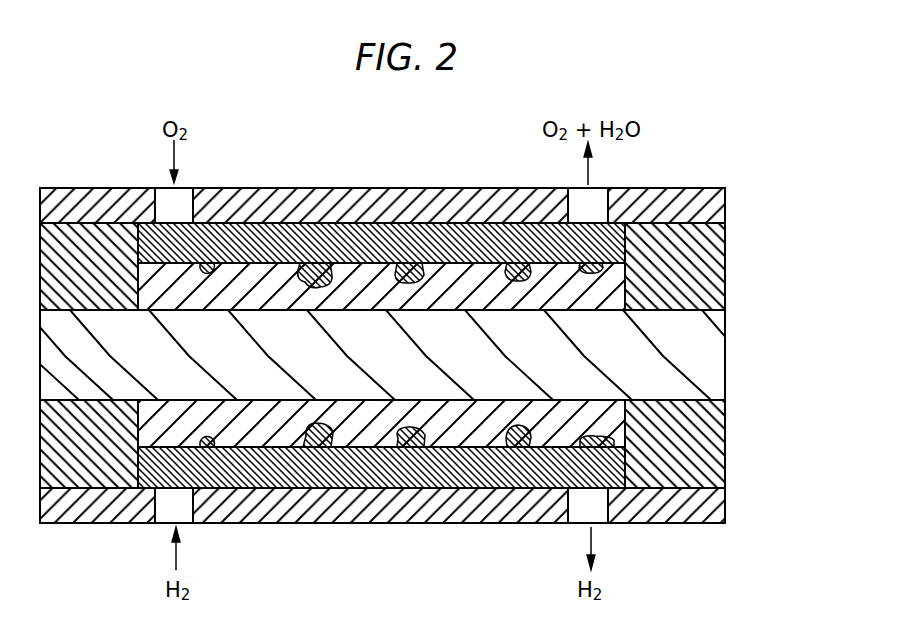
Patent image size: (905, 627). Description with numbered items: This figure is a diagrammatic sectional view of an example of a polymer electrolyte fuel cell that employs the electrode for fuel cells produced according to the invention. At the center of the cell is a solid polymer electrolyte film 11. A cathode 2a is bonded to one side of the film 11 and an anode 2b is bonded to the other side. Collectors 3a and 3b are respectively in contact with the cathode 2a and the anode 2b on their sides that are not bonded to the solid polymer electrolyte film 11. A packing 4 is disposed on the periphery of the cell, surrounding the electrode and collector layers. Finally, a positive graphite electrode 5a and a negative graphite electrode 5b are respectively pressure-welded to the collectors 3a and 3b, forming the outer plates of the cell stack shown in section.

The positive graphite electrode 5a is at (725, 211).
The collector 3a is at (613, 243).
The cathode 2a is at (610, 278).
The packing 4 is at (725, 303).
The solid polymer electrolyte film 11 is at (725, 354).
The anode 2b is at (612, 438).
The collector 3b is at (613, 470).
The negative graphite electrode 5b is at (725, 503).